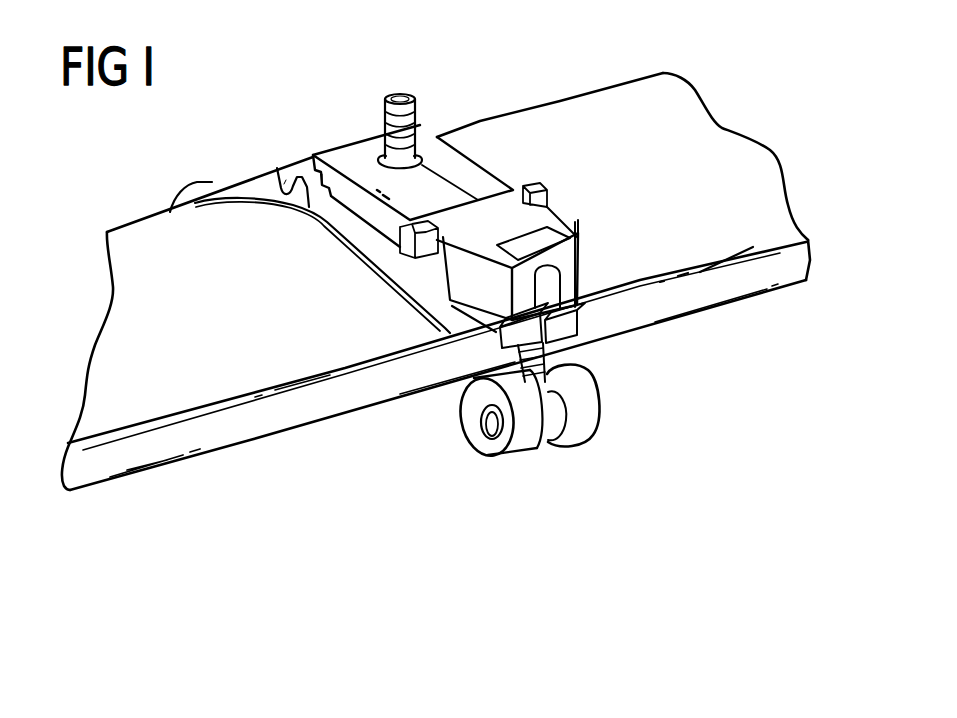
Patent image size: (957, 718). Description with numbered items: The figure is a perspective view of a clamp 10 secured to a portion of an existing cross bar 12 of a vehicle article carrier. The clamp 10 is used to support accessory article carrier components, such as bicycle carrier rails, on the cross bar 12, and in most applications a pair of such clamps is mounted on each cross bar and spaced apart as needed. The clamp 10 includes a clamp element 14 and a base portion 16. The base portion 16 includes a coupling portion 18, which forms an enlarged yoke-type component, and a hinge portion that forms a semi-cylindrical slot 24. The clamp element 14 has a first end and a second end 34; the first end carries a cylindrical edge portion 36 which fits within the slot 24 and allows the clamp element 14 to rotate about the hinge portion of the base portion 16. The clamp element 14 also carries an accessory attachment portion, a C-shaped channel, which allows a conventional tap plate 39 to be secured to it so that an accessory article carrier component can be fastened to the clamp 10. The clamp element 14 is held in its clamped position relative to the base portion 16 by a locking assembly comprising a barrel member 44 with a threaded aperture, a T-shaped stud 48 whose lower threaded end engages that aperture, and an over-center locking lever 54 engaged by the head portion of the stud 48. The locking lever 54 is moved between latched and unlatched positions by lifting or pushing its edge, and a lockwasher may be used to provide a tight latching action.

The clamp 10 is at (340, 90).
The cross bar 12 is at (247, 393).
The clamp element 14 is at (338, 228).
The base portion 16 is at (446, 412).
The coupling portion 18 is at (580, 432).
The semi-cylindrical slot 24 is at (284, 186).
The second end 34 is at (517, 367).
The cylindrical edge portion 36 is at (288, 172).
The tap plate 39 is at (448, 167).
The barrel member 44 is at (487, 452).
The T-shaped stud 48 is at (575, 362).
The over-center locking lever 54 is at (560, 217).